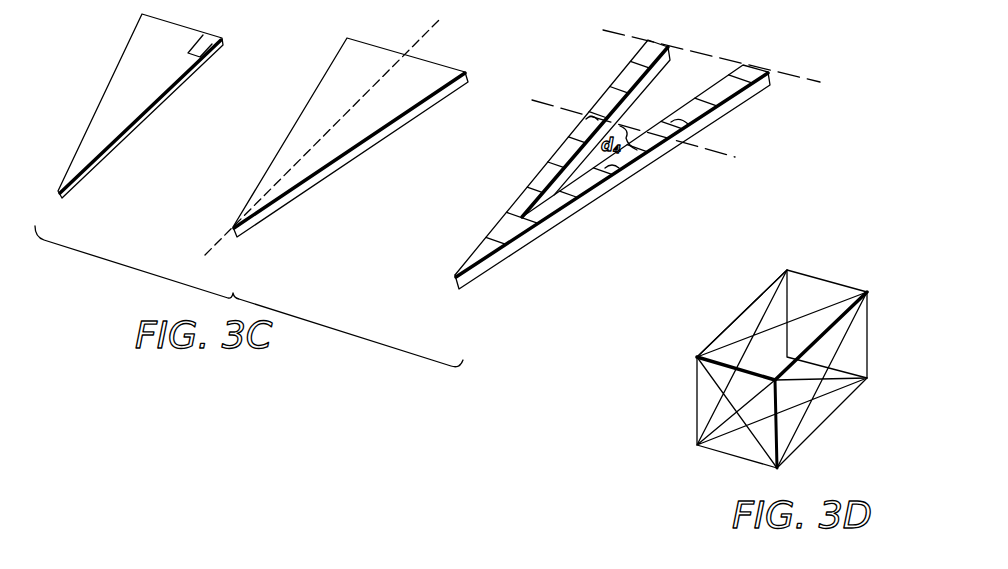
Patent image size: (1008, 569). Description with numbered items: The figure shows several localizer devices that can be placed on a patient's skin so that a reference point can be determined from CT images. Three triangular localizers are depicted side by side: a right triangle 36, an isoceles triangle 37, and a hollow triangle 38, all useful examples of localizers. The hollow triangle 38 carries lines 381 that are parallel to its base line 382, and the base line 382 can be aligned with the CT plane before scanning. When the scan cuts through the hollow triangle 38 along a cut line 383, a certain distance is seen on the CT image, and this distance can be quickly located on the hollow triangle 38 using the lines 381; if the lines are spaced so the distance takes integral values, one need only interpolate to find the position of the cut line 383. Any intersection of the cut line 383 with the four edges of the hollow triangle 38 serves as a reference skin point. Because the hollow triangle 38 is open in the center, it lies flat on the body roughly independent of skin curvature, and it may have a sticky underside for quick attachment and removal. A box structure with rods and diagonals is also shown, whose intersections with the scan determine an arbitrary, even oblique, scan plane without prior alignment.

The right triangle localizer 36 is at (123, 133).
The isoceles triangle localizer 37 is at (329, 161).
The hollow triangle localizer 38 is at (612, 164).
The lines 381 is at (688, 124).
The base line 382 is at (705, 53).
The cut line 383 is at (727, 155).